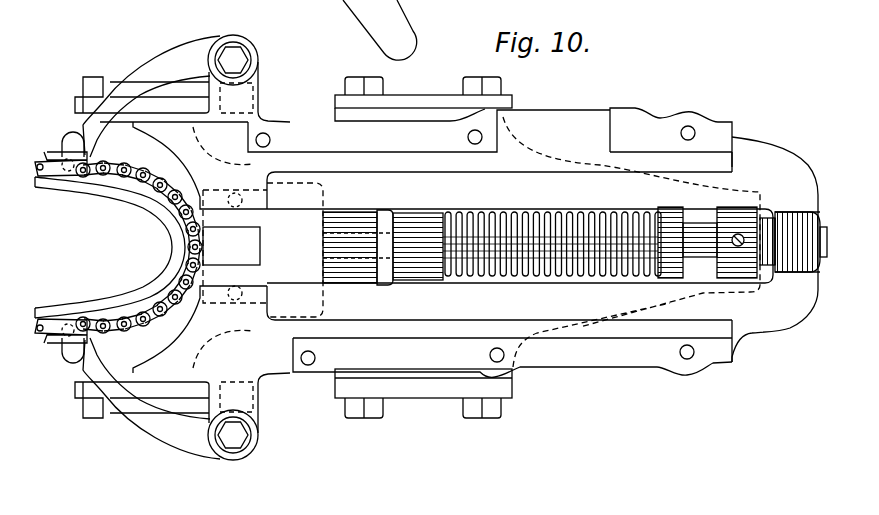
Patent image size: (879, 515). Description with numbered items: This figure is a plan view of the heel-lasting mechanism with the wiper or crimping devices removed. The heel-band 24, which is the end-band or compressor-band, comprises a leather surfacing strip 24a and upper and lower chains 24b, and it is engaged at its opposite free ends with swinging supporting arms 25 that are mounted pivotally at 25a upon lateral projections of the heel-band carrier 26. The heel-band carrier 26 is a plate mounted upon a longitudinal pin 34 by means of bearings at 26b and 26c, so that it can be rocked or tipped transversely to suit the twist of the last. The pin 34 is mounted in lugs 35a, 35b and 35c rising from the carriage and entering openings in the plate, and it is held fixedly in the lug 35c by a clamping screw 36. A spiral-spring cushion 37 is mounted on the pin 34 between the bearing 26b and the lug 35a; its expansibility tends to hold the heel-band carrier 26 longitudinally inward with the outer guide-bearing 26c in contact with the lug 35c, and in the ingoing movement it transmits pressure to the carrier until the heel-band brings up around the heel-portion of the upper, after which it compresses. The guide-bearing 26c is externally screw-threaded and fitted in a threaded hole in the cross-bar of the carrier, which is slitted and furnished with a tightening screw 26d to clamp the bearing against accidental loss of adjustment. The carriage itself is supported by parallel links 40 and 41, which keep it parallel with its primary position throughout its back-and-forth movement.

The heel-band 24 is at (110, 247).
The leather surfacing strip 24a is at (182, 246).
The chains 24b is at (119, 170).
The swinging supporting arms 25 is at (149, 63).
The pivots of the supporting arms 25a is at (247, 476).
The heel-band carrier 26 is at (272, 358).
The bearing 26b is at (418, 223).
The guide-bearing 26c is at (777, 213).
The tightening screw 26d is at (794, 270).
The longitudinal pin 34 is at (693, 228).
The lug 35a is at (673, 207).
The lug 35b is at (358, 223).
The lug 35c is at (743, 217).
The clamping screw 36 is at (703, 254).
The spiral-spring cushion 37 is at (565, 218).
The parallel link 40 is at (170, 96).
The parallel link 41 is at (410, 103).